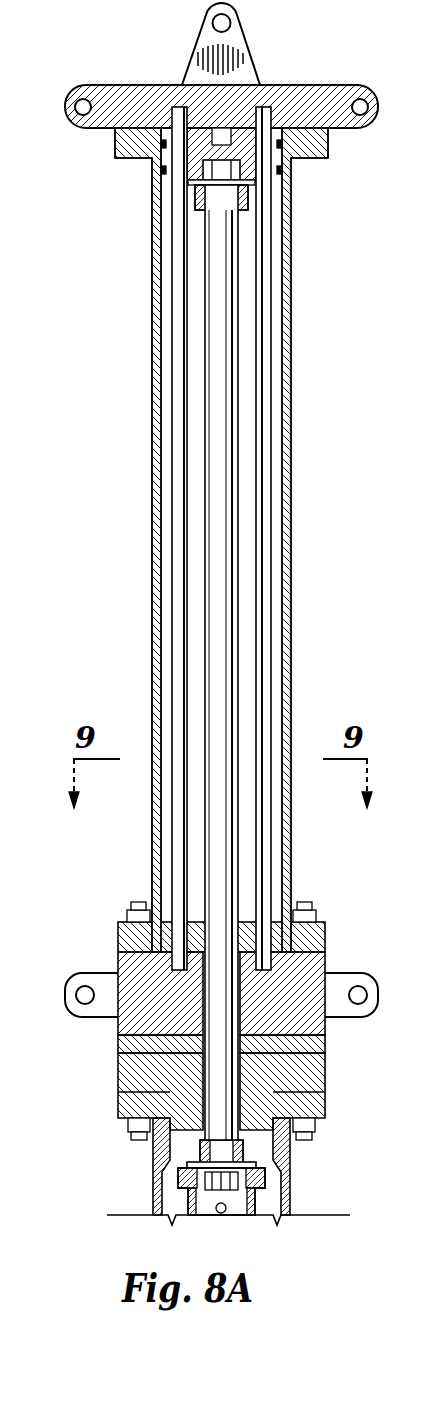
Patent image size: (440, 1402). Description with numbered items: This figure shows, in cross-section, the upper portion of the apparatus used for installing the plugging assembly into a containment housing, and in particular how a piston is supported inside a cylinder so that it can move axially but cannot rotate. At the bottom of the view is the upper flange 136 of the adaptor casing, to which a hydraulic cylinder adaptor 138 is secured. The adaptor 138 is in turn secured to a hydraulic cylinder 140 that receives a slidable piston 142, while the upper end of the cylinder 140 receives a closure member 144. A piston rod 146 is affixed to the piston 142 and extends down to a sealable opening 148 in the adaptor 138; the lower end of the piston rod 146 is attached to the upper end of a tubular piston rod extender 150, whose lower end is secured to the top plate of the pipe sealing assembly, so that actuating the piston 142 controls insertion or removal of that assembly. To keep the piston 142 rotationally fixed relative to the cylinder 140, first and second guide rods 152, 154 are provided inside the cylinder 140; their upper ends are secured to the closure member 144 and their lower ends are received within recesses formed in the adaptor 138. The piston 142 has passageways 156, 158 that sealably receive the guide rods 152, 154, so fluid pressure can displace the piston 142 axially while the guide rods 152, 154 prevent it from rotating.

The upper flange 136 is at (320, 1102).
The hydraulic cylinder adaptor 138 is at (328, 966).
The hydraulic cylinder 140 is at (290, 522).
The piston 142 is at (250, 192).
The closure member 144 is at (316, 95).
The piston rod 146 is at (223, 622).
The sealable opening 148 is at (214, 1069).
The tubular piston rod extender 150 is at (258, 1202).
The first guide rod 152 is at (173, 473).
The second guide rod 154 is at (265, 467).
The passageway 156 is at (166, 180).
The passageway 158 is at (263, 168).